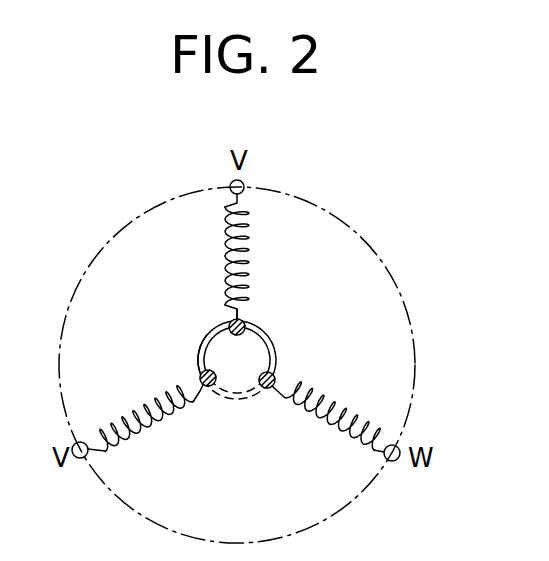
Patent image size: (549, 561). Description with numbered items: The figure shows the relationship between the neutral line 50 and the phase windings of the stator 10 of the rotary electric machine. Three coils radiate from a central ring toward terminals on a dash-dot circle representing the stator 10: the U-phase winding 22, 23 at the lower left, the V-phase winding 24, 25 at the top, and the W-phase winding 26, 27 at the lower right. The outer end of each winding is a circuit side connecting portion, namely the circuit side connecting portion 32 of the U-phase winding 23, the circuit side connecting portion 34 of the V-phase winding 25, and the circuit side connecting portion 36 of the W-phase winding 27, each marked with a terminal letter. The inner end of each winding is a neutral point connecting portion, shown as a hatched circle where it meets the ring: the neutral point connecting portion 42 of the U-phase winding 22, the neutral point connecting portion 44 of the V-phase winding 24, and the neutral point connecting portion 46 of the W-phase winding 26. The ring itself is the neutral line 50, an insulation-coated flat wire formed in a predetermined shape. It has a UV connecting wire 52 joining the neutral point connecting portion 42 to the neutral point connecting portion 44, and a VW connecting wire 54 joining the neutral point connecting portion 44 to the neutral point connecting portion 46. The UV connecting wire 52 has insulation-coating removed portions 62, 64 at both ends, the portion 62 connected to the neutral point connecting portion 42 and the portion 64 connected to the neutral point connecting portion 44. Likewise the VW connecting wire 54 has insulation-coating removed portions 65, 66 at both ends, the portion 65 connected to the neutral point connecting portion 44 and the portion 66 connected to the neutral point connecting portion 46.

The stator 10 is at (95, 250).
The U-phase winding 22 is at (174, 427).
The U-phase winding 23 is at (129, 452).
The V-phase winding 24 is at (270, 279).
The V-phase winding 25 is at (270, 229).
The W-phase winding 26 is at (314, 384).
The W-phase winding 27 is at (361, 409).
The circuit side connecting portion 32 is at (81, 459).
The circuit side connecting portion 34 is at (245, 186).
The circuit side connecting portion 36 is at (391, 462).
The neutral point connecting portion 42 is at (200, 377).
The neutral point connecting portion 44 is at (246, 326).
The neutral point connecting portion 46 is at (268, 389).
The neutral line 50 is at (254, 330).
The UV connecting wire 52 is at (211, 334).
The VW connecting wire 54 is at (266, 348).
The insulation-coating removed portion 62 is at (213, 388).
The insulation-coating removed portion 64 is at (229, 328).
The insulation-coating removed portion 65 is at (214, 304).
The insulation-coating removed portion 66 is at (262, 392).